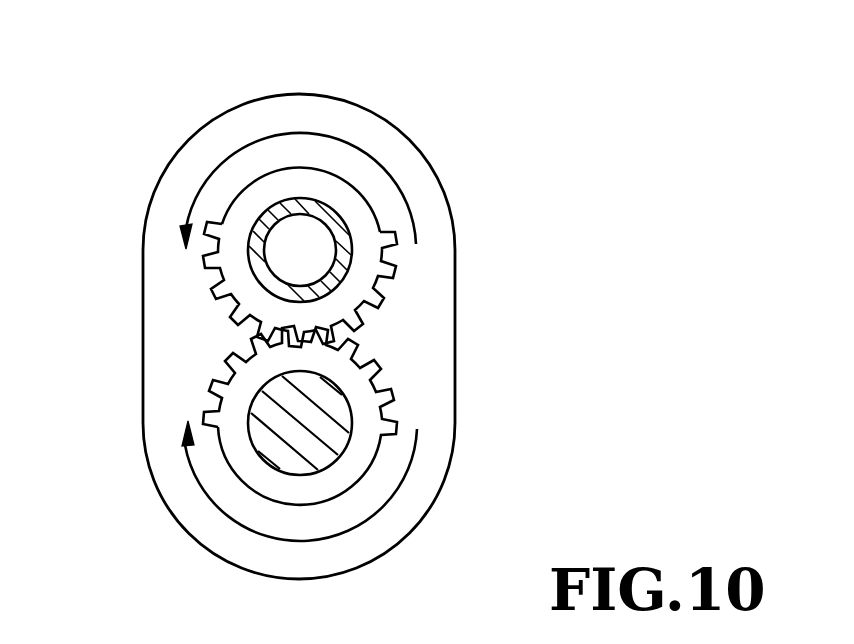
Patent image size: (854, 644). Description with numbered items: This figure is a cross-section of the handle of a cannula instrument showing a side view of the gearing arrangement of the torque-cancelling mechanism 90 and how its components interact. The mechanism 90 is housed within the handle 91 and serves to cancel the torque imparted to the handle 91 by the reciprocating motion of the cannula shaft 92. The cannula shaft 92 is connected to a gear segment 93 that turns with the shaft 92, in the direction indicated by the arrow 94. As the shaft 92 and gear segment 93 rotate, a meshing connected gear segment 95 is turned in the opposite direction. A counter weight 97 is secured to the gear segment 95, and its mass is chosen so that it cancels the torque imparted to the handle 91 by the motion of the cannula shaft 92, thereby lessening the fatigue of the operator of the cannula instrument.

The mechanism 90 is at (100, 350).
The handle 91 is at (393, 122).
The cannula shaft 92 is at (393, 262).
The gear segment 93 is at (388, 226).
The arrow 94 is at (247, 147).
The gear segment 95 is at (388, 380).
The counter weight 97 is at (322, 450).